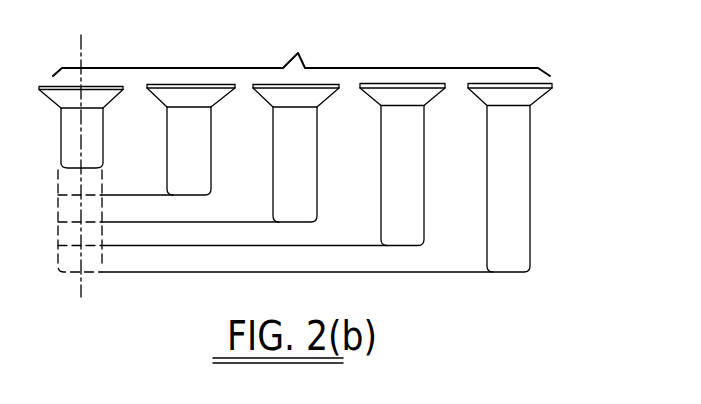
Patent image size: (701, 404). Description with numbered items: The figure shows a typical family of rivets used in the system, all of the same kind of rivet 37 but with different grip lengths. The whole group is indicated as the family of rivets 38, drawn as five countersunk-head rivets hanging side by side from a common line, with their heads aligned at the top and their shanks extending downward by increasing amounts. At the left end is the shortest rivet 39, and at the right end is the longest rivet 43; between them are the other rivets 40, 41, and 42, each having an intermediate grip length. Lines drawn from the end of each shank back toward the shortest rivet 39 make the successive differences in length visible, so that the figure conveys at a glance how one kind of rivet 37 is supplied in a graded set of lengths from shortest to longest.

The rivet 37 is at (107, 87).
The family of rivets 38 is at (301, 51).
The shortest rivet 39 is at (61, 166).
The rivet of intermediate length 40 is at (128, 194).
The rivet of intermediate length 41 is at (223, 221).
The rivet of intermediate length 42 is at (320, 245).
The longest rivet 43 is at (457, 271).